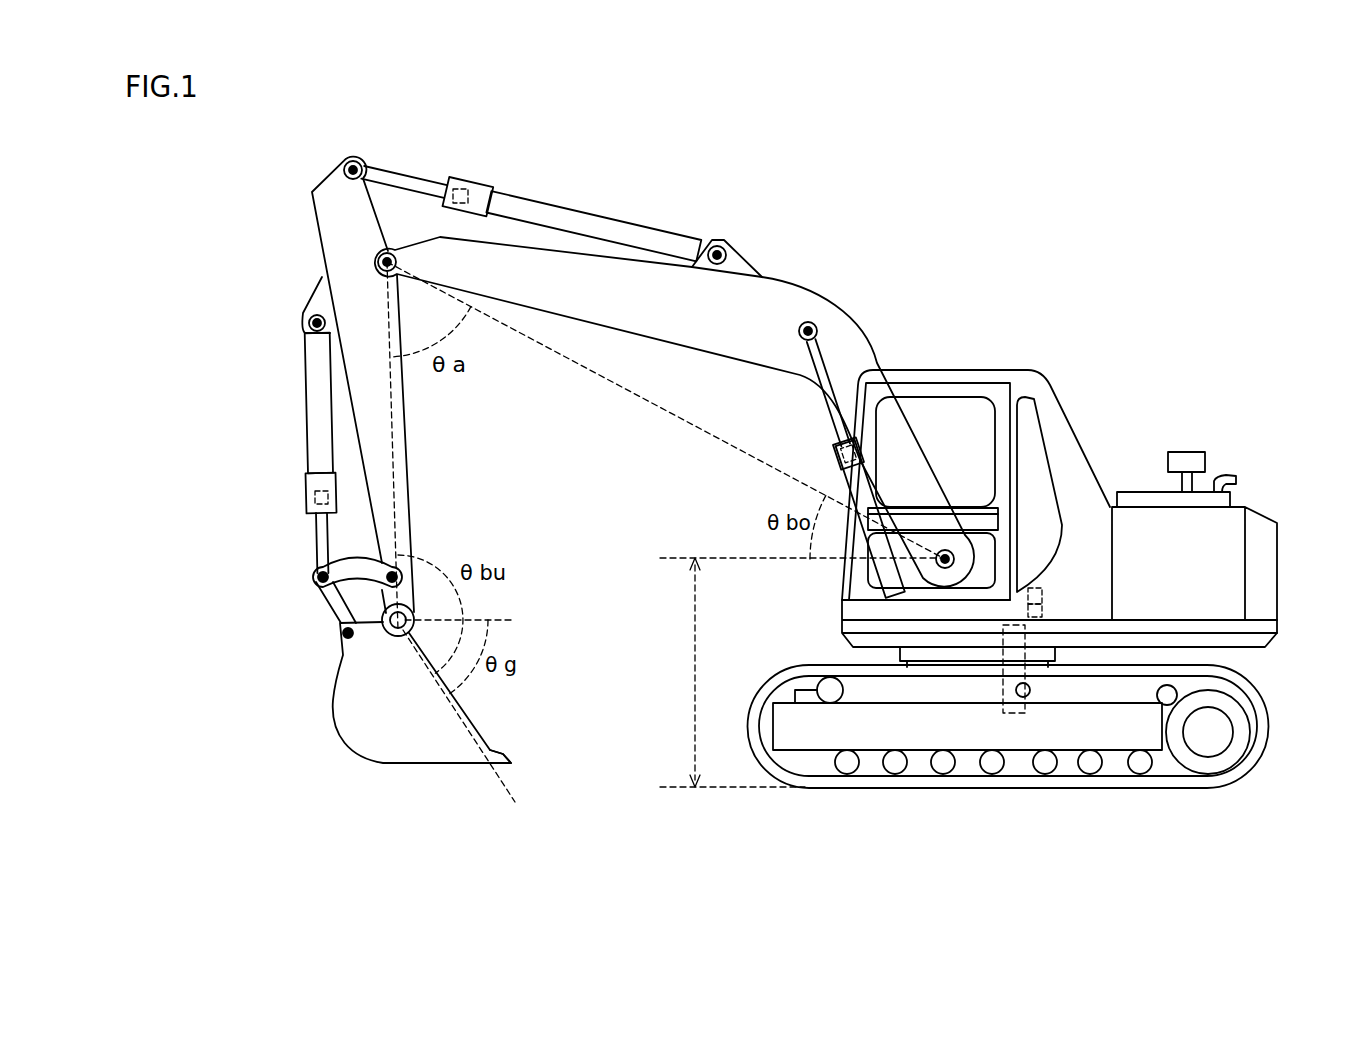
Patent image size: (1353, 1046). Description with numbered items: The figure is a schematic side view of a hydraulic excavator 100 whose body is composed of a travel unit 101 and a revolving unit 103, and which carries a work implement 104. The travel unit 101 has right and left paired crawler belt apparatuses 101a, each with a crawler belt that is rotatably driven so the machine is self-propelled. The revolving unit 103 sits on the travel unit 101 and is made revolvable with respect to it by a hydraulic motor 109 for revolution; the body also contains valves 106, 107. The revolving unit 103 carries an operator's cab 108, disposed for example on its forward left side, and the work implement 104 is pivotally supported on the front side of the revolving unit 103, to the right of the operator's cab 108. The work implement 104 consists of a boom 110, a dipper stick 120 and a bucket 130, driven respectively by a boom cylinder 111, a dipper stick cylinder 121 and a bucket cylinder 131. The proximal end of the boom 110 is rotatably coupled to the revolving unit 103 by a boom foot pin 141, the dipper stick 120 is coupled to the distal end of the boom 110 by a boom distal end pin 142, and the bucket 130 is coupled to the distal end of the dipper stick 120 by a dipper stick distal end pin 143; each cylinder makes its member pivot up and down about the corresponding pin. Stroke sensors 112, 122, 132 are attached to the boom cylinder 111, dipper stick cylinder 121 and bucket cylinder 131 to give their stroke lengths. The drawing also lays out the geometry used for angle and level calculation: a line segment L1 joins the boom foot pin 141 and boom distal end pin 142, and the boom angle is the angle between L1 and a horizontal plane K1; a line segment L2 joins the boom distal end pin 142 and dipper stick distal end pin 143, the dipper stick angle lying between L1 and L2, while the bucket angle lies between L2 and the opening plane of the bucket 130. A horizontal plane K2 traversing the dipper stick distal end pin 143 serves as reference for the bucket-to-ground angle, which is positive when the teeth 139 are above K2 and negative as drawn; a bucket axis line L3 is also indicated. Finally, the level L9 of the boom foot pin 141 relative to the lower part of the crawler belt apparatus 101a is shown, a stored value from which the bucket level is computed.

The hydraulic excavator 100 is at (1262, 199).
The travel unit 101 is at (904, 800).
The crawler belt apparatus 101a is at (1110, 790).
The revolving unit 103 is at (1122, 445).
The work implement 104 is at (668, 199).
The valve 106 is at (1044, 592).
The valve 107 is at (1043, 612).
The operator's cab 108 is at (958, 423).
The hydraulic motor 109 is at (1013, 713).
The boom 110 is at (848, 307).
The boom cylinder 111 is at (843, 470).
The stroke sensor 112 is at (837, 448).
The dipper stick 120 is at (320, 240).
The dipper stick cylinder 121 is at (607, 225).
The stroke sensor 122 is at (458, 177).
The bucket 130 is at (428, 765).
The bucket cylinder 131 is at (306, 403).
The stroke sensor 132 is at (313, 497).
The teeth 139 is at (505, 760).
The boom foot pin 141 is at (940, 566).
The boom distal end pin 142 is at (375, 262).
The dipper stick distal end pin 143 is at (392, 618).
The horizontal plane K1 is at (783, 563).
The horizontal plane K2 is at (500, 613).
The line segment L1 is at (628, 392).
The line segment L2 is at (398, 468).
The bucket axis line L3 is at (513, 793).
The level L9 is at (732, 672).